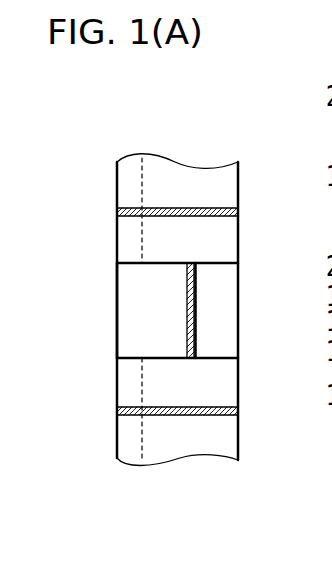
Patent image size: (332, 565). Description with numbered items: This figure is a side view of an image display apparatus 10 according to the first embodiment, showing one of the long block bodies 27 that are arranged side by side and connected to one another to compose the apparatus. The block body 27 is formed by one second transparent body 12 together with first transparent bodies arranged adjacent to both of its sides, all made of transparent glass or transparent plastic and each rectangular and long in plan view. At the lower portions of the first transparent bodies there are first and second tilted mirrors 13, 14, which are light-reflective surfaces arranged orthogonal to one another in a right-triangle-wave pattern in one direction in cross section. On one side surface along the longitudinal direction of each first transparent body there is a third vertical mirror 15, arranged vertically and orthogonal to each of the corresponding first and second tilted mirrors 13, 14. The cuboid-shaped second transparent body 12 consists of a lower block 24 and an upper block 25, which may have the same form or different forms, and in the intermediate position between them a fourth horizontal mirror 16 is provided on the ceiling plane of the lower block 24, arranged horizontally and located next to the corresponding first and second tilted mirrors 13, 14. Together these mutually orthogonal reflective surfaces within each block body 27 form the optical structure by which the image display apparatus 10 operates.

The image display apparatus 10 is at (216, 140).
The second transparent body 12 is at (117, 347).
The first tilted mirror 13 is at (127, 437).
The second tilted mirror 14 is at (132, 452).
The third vertical mirror 15 is at (173, 217).
The fourth horizontal mirror 16 is at (187, 339).
The lower block 24 is at (142, 303).
The upper block 25 is at (222, 337).
The block body 27 is at (245, 207).